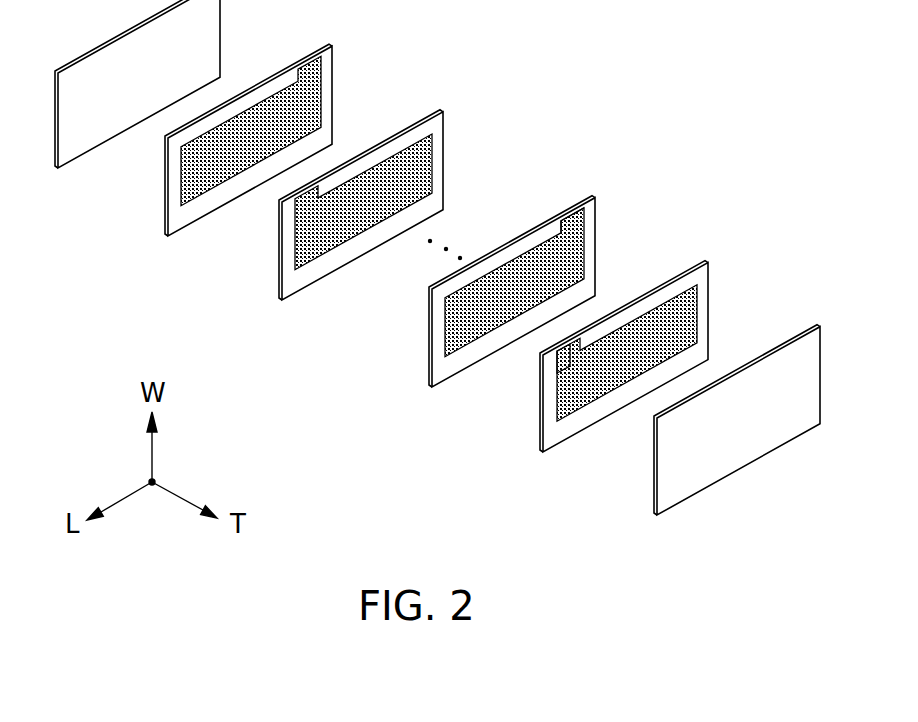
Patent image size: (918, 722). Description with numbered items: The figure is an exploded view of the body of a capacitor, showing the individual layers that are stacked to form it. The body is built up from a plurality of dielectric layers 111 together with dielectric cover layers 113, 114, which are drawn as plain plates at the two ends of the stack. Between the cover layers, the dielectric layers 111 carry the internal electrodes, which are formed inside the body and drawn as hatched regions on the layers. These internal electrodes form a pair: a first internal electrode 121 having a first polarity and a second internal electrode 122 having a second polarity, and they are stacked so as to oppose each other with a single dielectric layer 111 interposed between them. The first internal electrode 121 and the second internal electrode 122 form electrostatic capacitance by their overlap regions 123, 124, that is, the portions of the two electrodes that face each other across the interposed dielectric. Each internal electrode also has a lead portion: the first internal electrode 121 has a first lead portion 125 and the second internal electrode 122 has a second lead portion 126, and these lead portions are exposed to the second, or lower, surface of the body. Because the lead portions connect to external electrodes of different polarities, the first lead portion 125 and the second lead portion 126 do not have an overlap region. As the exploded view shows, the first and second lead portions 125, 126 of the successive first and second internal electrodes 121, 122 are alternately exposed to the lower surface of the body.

The dielectric layer 111 is at (597, 268).
The dielectric cover layer 113 is at (730, 452).
The dielectric cover layer 114 is at (80, 142).
The first internal electrode 121 is at (539, 382).
The second internal electrode 122 is at (593, 256).
The overlap region 123 is at (628, 385).
The overlap region 124 is at (523, 288).
The first lead portion 125 is at (556, 372).
The second lead portion 126 is at (561, 220).